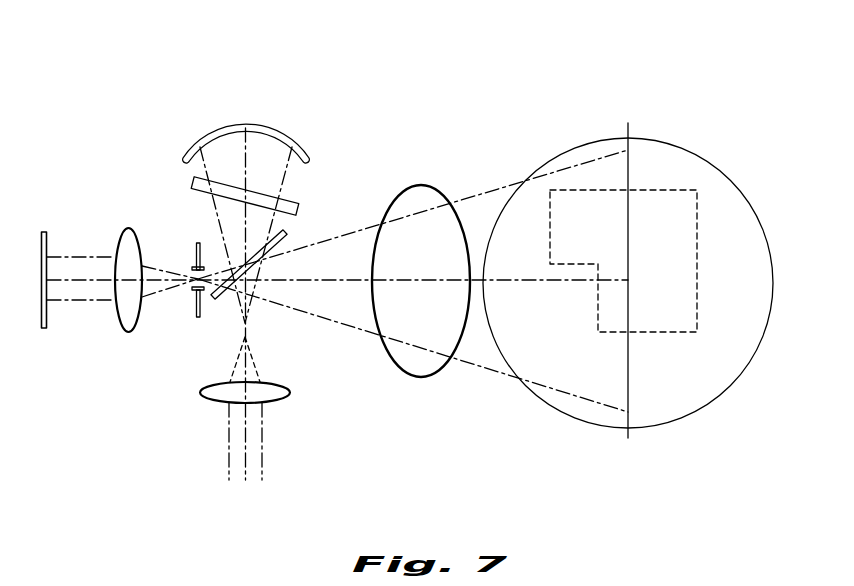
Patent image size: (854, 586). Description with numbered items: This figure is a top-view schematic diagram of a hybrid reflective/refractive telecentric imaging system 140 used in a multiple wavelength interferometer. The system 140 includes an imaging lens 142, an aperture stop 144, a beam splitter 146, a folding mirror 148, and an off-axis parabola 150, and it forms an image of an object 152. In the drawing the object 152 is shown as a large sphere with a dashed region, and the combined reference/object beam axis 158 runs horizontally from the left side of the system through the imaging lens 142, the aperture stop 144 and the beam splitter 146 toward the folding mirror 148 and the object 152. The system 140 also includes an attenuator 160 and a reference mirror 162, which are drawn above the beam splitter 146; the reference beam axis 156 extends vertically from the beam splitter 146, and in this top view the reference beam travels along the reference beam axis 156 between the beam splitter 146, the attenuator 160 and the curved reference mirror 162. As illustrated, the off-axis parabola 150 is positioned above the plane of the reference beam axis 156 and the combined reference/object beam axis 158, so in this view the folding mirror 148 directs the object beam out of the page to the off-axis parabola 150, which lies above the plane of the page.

The system 140 is at (457, 94).
The imaging lens 142 is at (128, 228).
The aperture stop 144 is at (194, 243).
The beam splitter 146 is at (288, 236).
The folding mirror 148 is at (384, 347).
The off-axis parabola 150 is at (668, 427).
The object 152 is at (700, 203).
The reference beam axis 156 is at (246, 436).
The combined reference/object beam axis 158 is at (79, 282).
The attenuator 160 is at (194, 178).
The reference mirror 162 is at (237, 123).